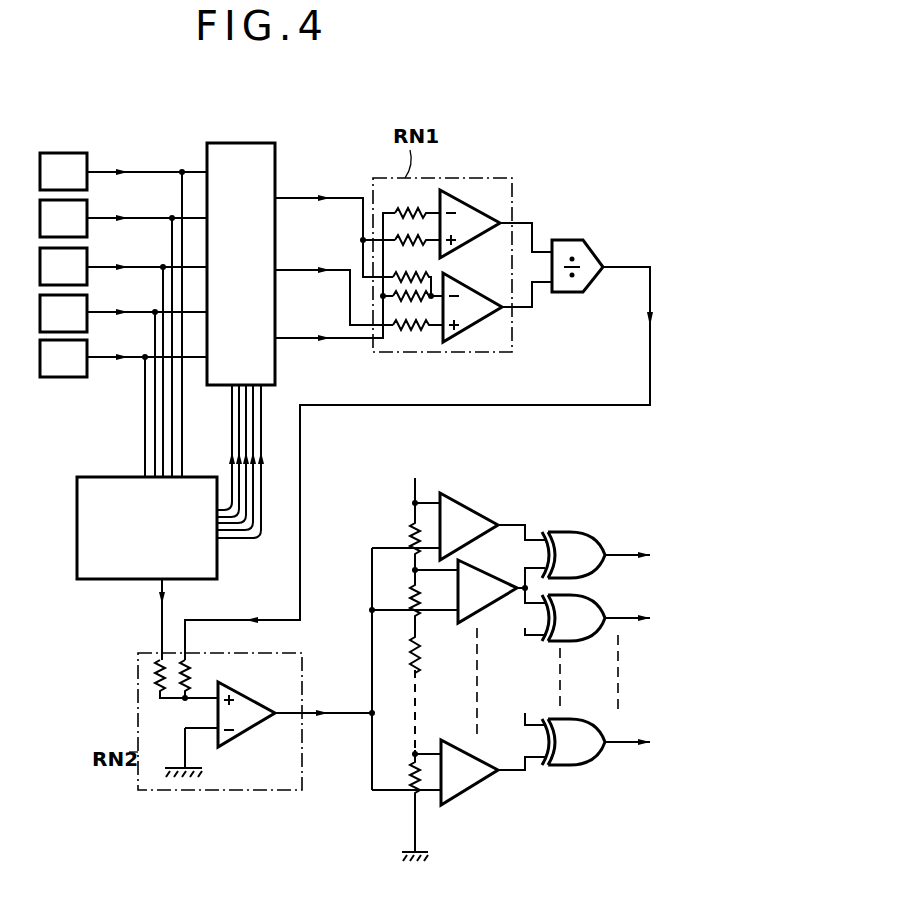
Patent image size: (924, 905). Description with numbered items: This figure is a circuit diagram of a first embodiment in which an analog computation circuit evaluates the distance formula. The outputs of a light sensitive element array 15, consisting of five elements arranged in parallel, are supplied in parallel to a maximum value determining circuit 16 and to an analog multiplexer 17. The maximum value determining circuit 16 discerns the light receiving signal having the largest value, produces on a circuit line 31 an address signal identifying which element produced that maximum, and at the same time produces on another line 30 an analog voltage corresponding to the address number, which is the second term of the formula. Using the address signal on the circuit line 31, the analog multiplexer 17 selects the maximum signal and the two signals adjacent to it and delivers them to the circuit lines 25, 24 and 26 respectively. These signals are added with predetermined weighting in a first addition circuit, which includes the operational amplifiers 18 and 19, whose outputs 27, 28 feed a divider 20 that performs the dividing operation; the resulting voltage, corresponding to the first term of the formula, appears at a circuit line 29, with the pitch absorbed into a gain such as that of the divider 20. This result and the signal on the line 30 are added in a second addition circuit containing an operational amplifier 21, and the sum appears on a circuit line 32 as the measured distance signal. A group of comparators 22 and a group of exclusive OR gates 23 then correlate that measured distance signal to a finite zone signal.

The light sensitive element array 15 is at (66, 153).
The maximum value determining circuit 16 is at (97, 477).
The analog multiplexer 17 is at (247, 143).
The operational amplifier 18 is at (468, 205).
The operational amplifier 19 is at (468, 280).
The divider 20 is at (578, 240).
The operational amplifier 21 is at (248, 732).
The comparators 22 is at (460, 502).
The exclusive OR gates 23 is at (573, 532).
The circuit line 24 is at (303, 197).
The circuit line 25 is at (303, 269).
The circuit line 26 is at (303, 337).
The output of amplifier 18 27 is at (533, 220).
The output of amplifier 19 28 is at (532, 312).
The circuit line 29 is at (650, 366).
The line 30 is at (160, 626).
The circuit line 31 is at (262, 522).
The circuit line 32 is at (336, 712).